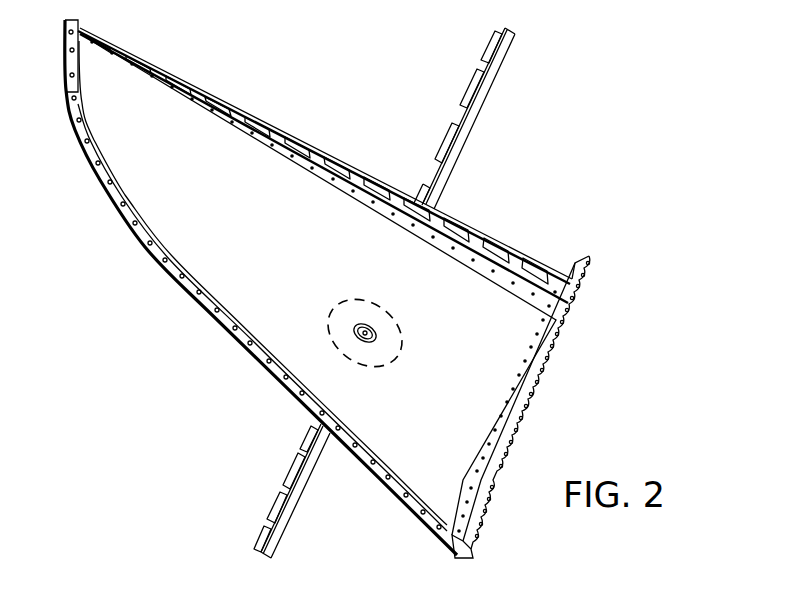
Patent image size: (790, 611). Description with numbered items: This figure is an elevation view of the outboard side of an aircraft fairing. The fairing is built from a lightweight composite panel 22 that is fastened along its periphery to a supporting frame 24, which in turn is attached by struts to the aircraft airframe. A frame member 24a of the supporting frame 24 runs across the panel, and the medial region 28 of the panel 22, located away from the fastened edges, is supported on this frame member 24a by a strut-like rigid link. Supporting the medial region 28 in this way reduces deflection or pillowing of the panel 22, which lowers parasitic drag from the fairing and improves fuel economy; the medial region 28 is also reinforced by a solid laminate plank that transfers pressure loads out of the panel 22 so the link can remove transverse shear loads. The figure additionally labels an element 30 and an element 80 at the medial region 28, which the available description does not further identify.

The composite panel 22 is at (178, 212).
The supporting frame 24 is at (577, 263).
The frame member 24a is at (496, 64).
The medial region 28 is at (348, 293).
The fitting 30 is at (326, 327).
The fastener opening 80 is at (360, 338).